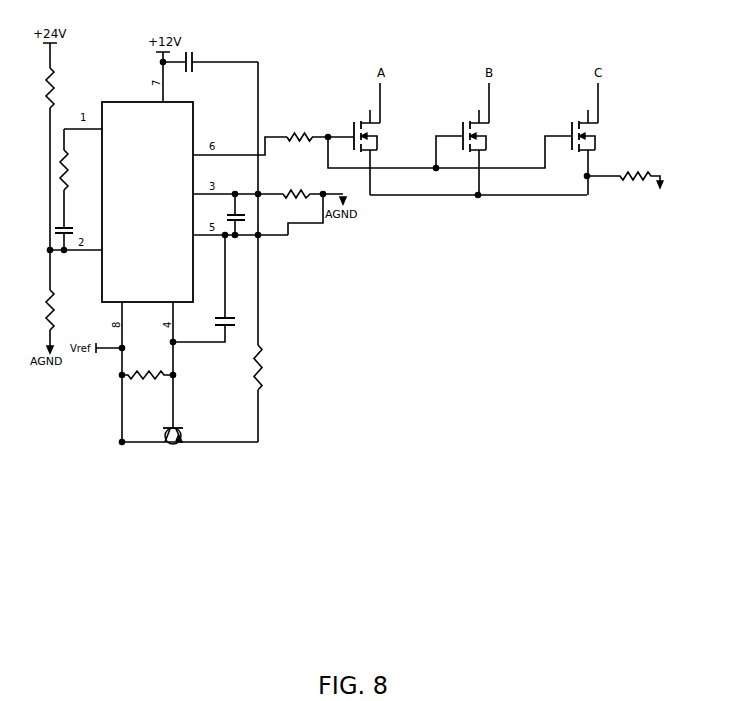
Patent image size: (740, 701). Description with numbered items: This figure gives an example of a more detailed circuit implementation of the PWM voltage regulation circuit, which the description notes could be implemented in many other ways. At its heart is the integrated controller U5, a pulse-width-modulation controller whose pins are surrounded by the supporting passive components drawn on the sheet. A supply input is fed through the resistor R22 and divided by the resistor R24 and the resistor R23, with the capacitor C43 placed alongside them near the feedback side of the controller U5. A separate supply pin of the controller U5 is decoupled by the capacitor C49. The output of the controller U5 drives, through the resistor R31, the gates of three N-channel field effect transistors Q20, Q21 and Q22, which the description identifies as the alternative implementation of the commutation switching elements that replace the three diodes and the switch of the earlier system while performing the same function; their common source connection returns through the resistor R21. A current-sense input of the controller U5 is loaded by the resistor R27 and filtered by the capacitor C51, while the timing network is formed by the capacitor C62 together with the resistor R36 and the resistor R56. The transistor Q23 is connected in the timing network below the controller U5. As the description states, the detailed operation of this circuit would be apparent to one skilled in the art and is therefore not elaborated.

The resistor 12.5K R22 is at (64, 88).
The resistor 24.9K R24 is at (78, 169).
The resistor 2.49K R23 is at (64, 310).
The capacitor .1uF C43 is at (76, 226).
The UC2843 PWM controller U5 is at (147, 190).
The capacitor .47uF C49 is at (197, 60).
The resistor 4.7 R31 is at (301, 135).
The resistor 1K R27 is at (298, 192).
The capacitor 100pF C51 is at (225, 214).
The capacitor 3000pF C62 is at (220, 288).
The resistor 10K R36 is at (147, 374).
The resistor 2.74K R56 is at (245, 367).
The transistor 2N3904 Q23 is at (179, 446).
The MOSFET IRFL014N Q20 is at (391, 152).
The MOSFET IRFL014N Q21 is at (500, 152).
The MOSFET IRFL014N Q22 is at (609, 152).
The resistor 1 ohm R21 is at (630, 183).